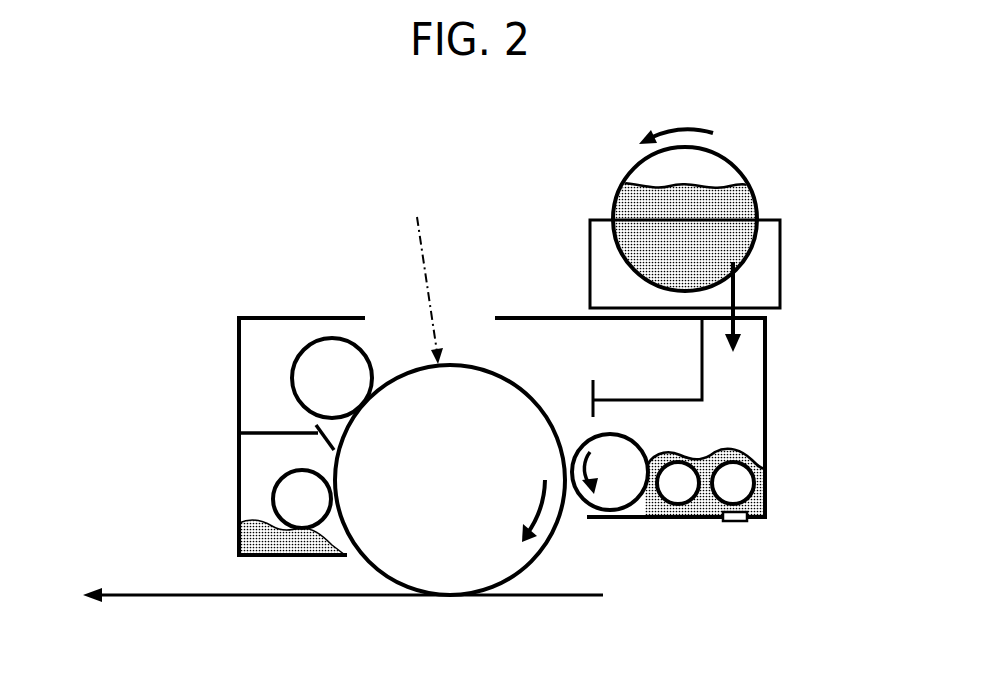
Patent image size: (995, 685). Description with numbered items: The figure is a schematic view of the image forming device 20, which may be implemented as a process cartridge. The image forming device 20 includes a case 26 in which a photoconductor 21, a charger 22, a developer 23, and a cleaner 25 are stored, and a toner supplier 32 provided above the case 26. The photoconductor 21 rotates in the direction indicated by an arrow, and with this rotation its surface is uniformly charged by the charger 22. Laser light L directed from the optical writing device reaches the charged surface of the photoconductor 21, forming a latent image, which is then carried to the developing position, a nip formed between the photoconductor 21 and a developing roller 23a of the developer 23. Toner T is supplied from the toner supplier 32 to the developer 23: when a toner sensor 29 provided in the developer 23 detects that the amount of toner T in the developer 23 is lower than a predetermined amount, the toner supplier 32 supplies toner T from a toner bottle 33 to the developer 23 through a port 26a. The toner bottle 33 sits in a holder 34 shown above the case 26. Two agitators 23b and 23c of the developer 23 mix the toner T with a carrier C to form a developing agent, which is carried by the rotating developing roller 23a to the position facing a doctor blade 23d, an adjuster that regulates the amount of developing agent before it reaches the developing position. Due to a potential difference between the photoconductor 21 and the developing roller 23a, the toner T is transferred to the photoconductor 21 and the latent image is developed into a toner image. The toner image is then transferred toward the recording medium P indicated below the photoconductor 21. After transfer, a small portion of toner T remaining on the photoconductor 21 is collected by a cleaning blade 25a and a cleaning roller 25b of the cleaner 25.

The image forming device 20 is at (214, 332).
The photoconductor 21 is at (393, 568).
The charger 22 is at (333, 338).
The developer 23 is at (756, 423).
The developing roller 23a is at (608, 497).
The agitator 23b is at (677, 497).
The agitator 23c is at (746, 484).
The doctor blade 23d is at (593, 386).
The cleaner 25 is at (252, 486).
The cleaning blade 25a is at (332, 449).
The cleaning roller 25b is at (300, 517).
The case 26 is at (272, 318).
The port 26a is at (742, 325).
The toner sensor 29 is at (731, 521).
The toner supplier 32 is at (781, 180).
The toner bottle 33 is at (731, 160).
The container holder 34 is at (590, 263).
The laser light L is at (428, 285).
The recording medium P is at (540, 597).
The toner T is at (240, 541).
The carrier C is at (765, 473).